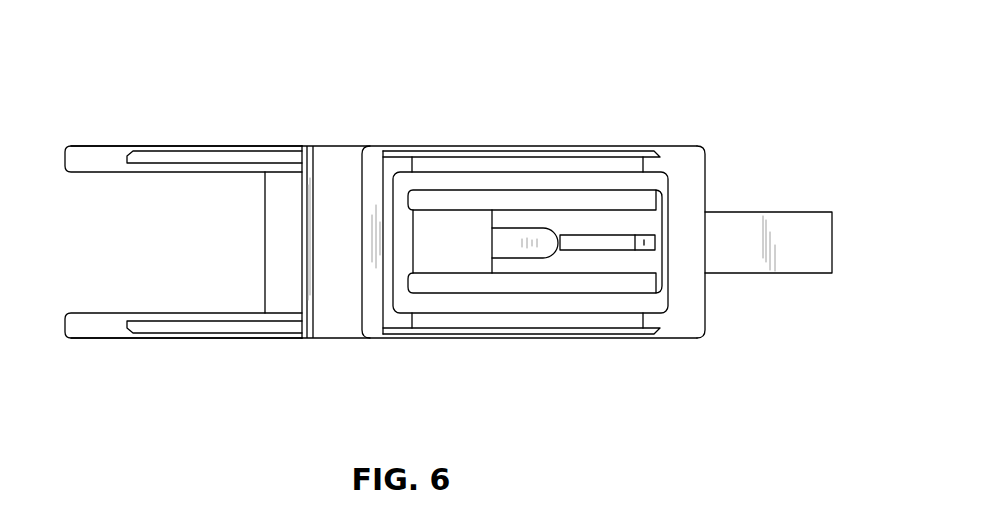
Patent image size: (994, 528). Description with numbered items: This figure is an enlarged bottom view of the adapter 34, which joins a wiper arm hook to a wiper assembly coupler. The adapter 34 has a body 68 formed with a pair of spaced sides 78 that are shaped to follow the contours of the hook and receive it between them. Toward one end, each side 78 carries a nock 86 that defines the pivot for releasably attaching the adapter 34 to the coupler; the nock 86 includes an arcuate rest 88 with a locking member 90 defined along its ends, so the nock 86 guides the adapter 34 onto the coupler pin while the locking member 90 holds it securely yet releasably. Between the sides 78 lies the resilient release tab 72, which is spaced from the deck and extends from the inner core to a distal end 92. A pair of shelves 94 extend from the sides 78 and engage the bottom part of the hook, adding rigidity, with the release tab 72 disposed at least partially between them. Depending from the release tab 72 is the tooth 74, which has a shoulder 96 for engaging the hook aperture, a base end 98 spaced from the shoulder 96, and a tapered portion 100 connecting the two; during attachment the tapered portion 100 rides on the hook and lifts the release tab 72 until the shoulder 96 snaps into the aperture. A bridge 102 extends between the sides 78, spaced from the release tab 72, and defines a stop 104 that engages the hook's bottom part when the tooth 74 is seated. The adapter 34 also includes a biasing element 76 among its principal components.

The adapter 34 is at (147, 120).
The body 68 is at (628, 135).
The release tab 72 is at (440, 235).
The tooth 74 is at (520, 272).
The biasing element 76 is at (615, 243).
The sides 78 is at (573, 146).
The nock 86 is at (327, 188).
The arcuate rest 88 is at (335, 310).
The locking member 90 is at (357, 181).
The distal end 92 is at (832, 243).
The shelves 94 is at (481, 183).
The shoulder 96 is at (566, 240).
The base end 98 is at (488, 241).
The tapered portion 100 is at (530, 237).
The bridge 102 is at (687, 240).
The stop 104 is at (657, 224).